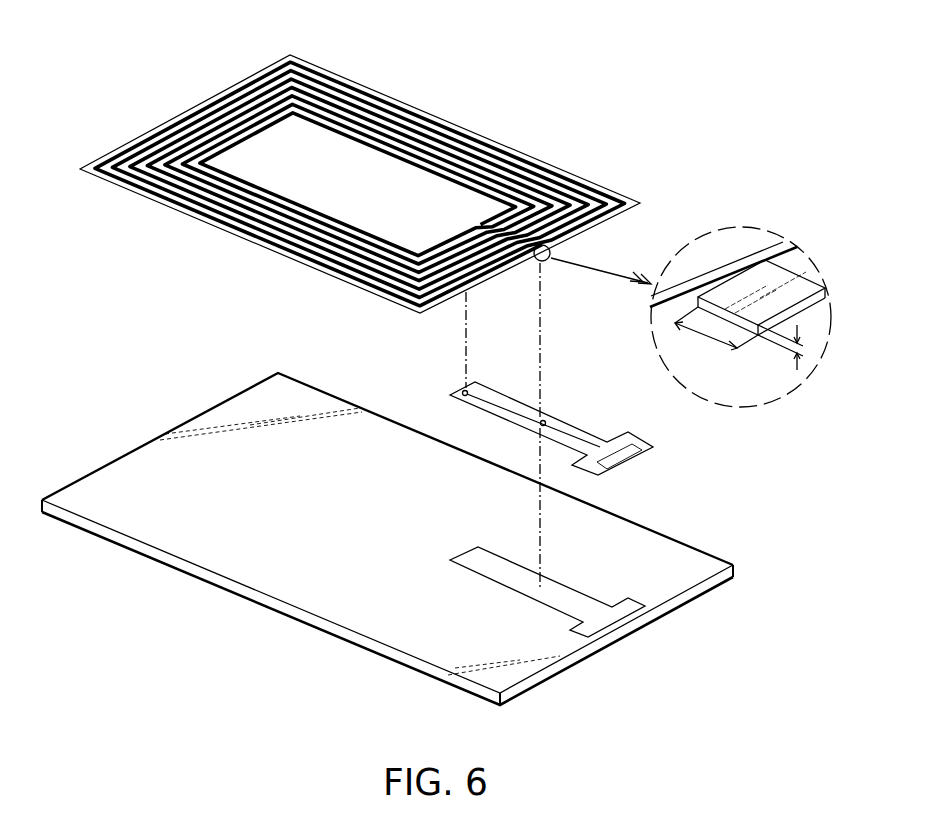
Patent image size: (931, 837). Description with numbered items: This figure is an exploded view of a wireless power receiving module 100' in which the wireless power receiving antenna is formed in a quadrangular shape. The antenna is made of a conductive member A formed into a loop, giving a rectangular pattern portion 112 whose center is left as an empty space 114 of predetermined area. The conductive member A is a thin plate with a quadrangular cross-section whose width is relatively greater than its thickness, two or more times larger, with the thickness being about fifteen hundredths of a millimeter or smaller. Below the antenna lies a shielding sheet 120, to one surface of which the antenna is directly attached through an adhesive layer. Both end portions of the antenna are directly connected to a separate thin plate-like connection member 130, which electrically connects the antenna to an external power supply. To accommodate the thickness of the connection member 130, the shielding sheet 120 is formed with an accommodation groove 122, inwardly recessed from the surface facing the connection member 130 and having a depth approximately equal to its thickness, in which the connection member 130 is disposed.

The wireless power receiving module 100' is at (388, 17).
The pattern portion 112 is at (503, 147).
The empty space 114 is at (385, 175).
The conductive member A is at (737, 293).
The connection member 130 is at (655, 444).
The shielding sheet 120 is at (670, 537).
The accommodation groove 122 is at (575, 614).